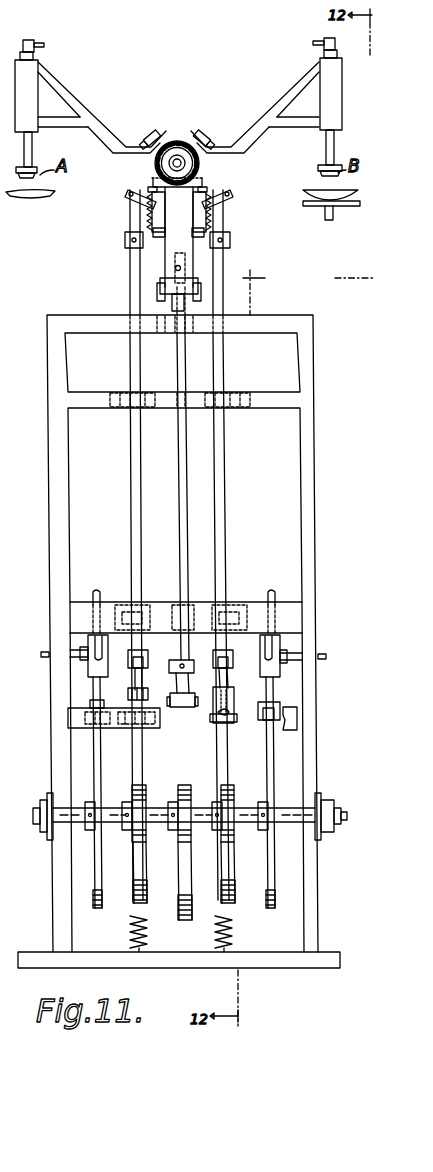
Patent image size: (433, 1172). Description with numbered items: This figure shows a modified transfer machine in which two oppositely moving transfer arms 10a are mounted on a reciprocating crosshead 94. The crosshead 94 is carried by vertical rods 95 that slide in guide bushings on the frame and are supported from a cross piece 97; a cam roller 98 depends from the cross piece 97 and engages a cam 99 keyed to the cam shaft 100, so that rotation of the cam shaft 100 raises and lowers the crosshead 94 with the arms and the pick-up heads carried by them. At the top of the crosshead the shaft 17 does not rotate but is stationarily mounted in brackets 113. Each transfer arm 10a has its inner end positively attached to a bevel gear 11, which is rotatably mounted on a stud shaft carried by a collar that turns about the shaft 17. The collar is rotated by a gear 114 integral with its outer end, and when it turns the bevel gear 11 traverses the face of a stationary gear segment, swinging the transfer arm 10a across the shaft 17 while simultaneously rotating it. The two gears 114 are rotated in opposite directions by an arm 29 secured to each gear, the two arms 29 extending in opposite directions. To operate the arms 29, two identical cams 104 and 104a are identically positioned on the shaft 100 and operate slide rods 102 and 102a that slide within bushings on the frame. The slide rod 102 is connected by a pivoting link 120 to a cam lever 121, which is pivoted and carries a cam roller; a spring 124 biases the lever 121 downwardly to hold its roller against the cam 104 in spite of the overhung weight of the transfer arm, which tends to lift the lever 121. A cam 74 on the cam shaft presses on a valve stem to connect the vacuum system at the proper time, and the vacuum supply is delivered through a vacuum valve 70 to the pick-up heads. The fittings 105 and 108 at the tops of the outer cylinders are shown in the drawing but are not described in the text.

The fluid cylinder 105 is at (44, 22).
The pipe fitting 108 is at (45, 45).
The transfer arm 10a is at (70, 96).
The bevel gear 11 is at (186, 142).
The shaft 17 is at (200, 169).
The brackets 113 is at (158, 184).
The arm 29 is at (128, 196).
The gear 114 is at (150, 218).
The crosshead 94 is at (165, 262).
The vertical rods 95 is at (170, 306).
The slide rod 102a is at (130, 368).
The slide rod 102 is at (226, 368).
The vacuum valve 70 is at (93, 636).
The cross piece 97 is at (180, 660).
The cam roller 98 is at (174, 690).
The pivoting link 120 is at (224, 674).
The cam lever 121 is at (228, 697).
The cam 74 is at (93, 744).
The cam 99 is at (178, 783).
The cam shaft 100 is at (343, 818).
The cam 104a is at (132, 895).
The cam 104 is at (236, 895).
The spring 124 is at (213, 934).